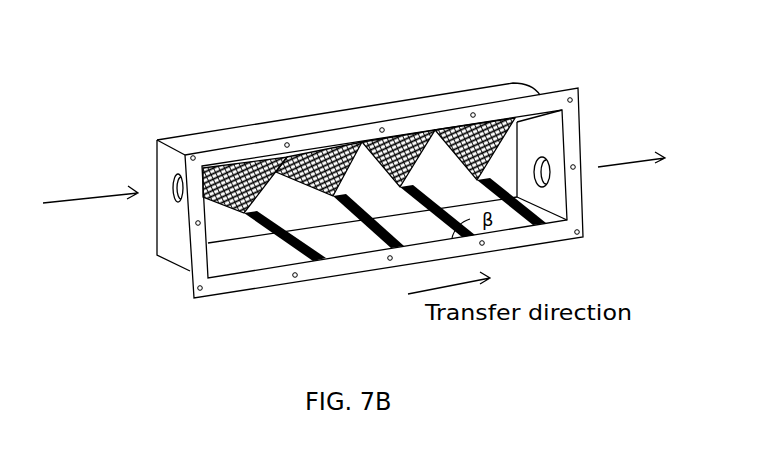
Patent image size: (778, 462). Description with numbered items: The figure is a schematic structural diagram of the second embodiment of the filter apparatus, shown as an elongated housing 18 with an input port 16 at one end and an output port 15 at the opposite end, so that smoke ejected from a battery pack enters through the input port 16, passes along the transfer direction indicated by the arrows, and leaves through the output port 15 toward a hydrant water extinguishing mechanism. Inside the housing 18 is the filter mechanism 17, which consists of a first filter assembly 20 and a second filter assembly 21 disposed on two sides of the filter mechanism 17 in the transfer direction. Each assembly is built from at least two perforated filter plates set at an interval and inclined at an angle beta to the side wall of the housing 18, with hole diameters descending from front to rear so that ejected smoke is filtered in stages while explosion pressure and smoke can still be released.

The output port 15 is at (547, 175).
The input port 16 is at (173, 187).
The filter mechanism 17 is at (423, 147).
The housing 18 is at (353, 128).
The first filter assembly 20 is at (267, 160).
The second filter assembly 21 is at (363, 232).